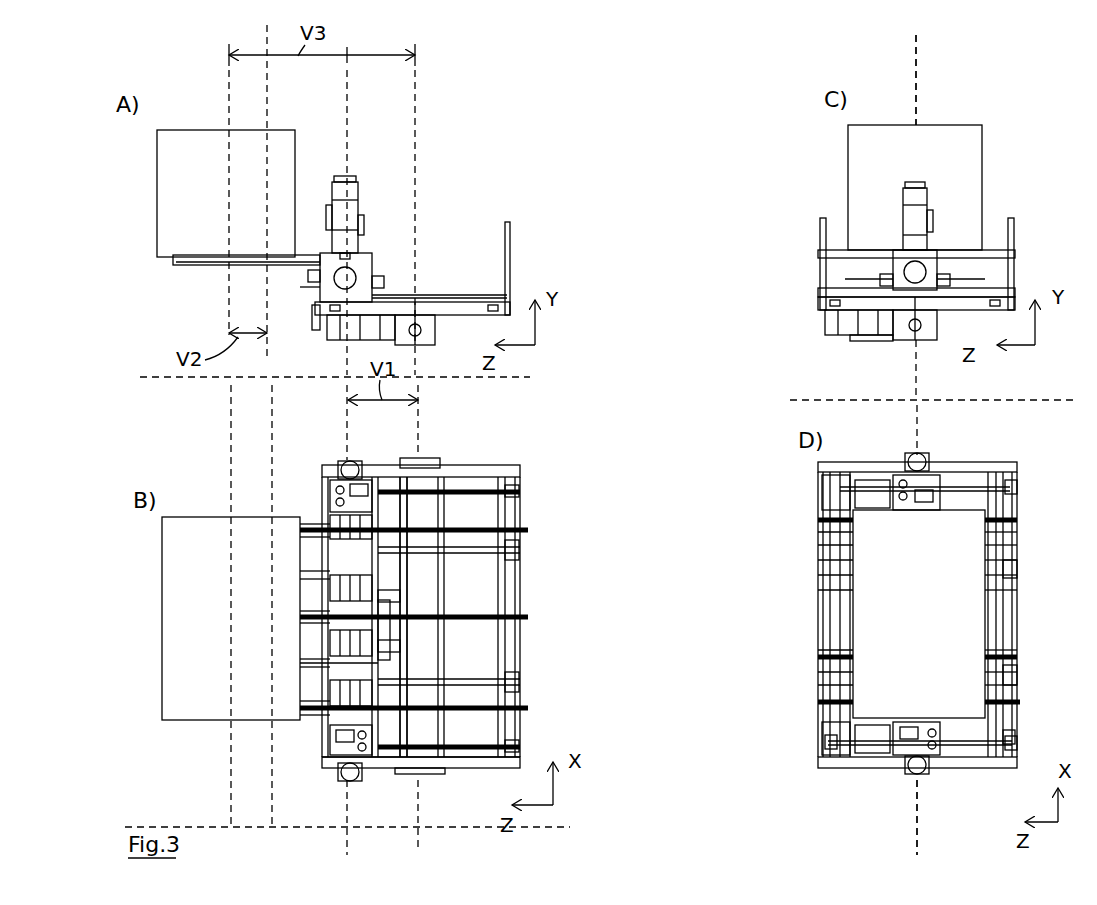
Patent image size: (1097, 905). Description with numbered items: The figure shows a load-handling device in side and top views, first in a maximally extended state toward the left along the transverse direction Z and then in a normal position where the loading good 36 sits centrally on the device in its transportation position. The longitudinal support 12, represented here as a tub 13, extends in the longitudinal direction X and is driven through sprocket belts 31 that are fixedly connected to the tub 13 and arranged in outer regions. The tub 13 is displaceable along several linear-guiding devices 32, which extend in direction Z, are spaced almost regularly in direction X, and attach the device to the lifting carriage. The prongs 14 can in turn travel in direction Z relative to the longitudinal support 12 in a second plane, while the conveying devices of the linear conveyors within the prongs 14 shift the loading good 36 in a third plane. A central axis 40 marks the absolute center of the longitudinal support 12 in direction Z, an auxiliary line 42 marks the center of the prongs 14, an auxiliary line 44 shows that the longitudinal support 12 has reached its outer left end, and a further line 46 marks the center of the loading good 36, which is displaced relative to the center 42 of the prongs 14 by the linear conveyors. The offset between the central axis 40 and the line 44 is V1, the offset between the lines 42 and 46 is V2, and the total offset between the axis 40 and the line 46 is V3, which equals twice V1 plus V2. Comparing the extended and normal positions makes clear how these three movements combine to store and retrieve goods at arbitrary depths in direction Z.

In FIG. 3A, the longitudinal support 12 is at (378, 265).
In FIG. 3B, the longitudinal support 12 is at (410, 619).
In FIG. 3B, the tub 13 is at (445, 512).
In FIG. 3C, the prongs 14 is at (836, 242).
In FIG. 3D, the prongs 14 is at (815, 536).
In FIG. 3B, the sprocket belts 31 is at (525, 530).
In FIG. 3B, the linear-guiding devices 32 is at (525, 617).
In FIG. 3D, the linear-guiding devices 32 is at (1020, 703).
In FIG. 3A, the loading good 36 is at (244, 197).
In FIG. 3B, the loading good 36 is at (212, 583).
In FIG. 3C, the loading good 36 is at (983, 183).
In FIG. 3D, the loading good 36 is at (940, 612).
In FIG. 3A, the central axis 40 is at (416, 158).
In FIG. 3B, the central axis 40 is at (420, 845).
In FIG. 3C, the central axis 40 is at (918, 82).
In FIG. 3D, the central axis 40 is at (920, 803).
In FIG. 3B, the auxiliary line 42 is at (274, 440).
In FIG. 3A, the auxiliary line 44 is at (348, 103).
In FIG. 3B, the auxiliary line 44 is at (349, 808).
In FIG. 3A, the center of the loading good 46 is at (229, 90).
In FIG. 3B, the center of the loading good 46 is at (229, 808).